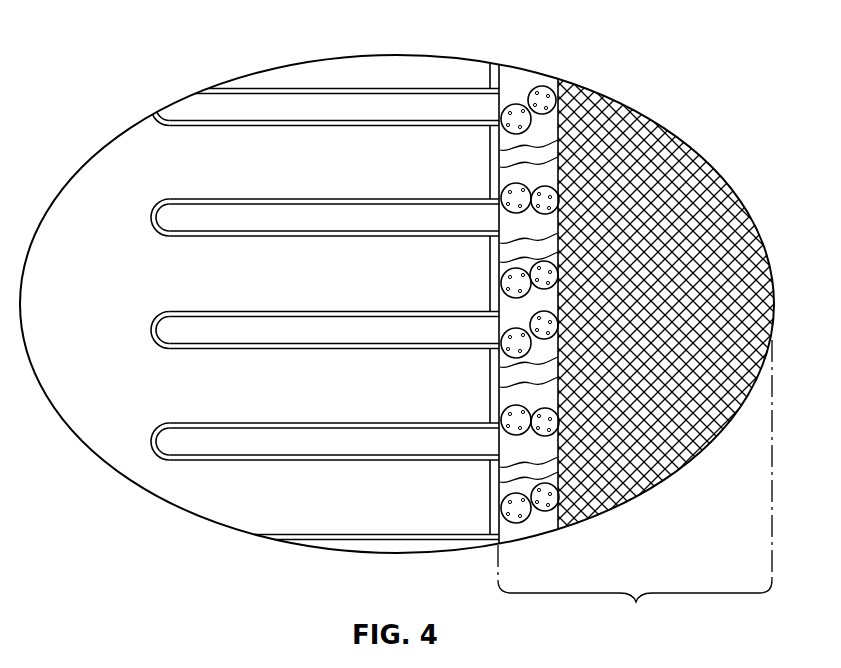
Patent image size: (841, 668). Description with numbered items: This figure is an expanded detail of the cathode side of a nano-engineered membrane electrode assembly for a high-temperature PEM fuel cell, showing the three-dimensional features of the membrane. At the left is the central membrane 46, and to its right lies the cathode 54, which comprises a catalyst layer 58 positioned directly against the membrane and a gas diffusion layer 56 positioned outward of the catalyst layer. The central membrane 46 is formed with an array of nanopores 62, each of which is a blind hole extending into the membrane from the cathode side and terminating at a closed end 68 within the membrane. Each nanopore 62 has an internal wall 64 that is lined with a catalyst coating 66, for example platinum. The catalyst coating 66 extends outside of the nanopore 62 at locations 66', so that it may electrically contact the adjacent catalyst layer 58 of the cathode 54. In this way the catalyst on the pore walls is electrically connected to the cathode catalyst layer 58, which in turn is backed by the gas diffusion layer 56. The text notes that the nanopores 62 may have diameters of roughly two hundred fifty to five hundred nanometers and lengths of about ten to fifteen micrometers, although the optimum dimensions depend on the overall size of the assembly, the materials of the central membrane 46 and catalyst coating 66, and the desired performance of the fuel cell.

The central membrane 46 is at (126, 133).
The cathode 54 is at (636, 602).
The gas diffusion layer 56 is at (670, 135).
The catalyst layer 58 is at (528, 75).
The nanopore 62 is at (275, 127).
The internal wall 64 is at (203, 127).
The catalyst coating 66 is at (396, 292).
The locations where the catalyst coating extends outside the nanopore 66' is at (488, 332).
The closed end 68 is at (157, 128).